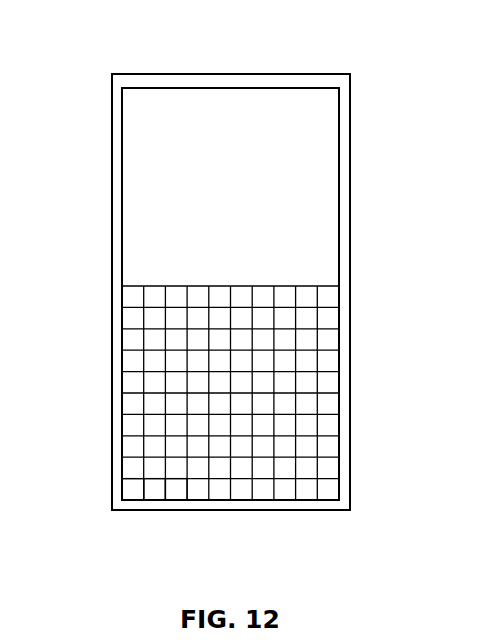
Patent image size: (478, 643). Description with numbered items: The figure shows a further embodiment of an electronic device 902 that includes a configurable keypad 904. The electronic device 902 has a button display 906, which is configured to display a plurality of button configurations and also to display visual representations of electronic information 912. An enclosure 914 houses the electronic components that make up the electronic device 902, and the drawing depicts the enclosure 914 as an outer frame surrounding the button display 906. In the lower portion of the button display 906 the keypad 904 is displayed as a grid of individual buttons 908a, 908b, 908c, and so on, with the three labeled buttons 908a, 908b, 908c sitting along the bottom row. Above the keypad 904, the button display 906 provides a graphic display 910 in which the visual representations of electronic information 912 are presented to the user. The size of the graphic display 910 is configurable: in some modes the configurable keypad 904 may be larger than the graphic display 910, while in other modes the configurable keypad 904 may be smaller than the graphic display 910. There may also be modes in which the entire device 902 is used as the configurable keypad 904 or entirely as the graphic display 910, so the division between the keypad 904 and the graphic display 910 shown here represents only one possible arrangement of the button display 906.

The electronic device 902 is at (108, 60).
The configurable keypad 904 is at (122, 386).
The button display 906 is at (364, 90).
The individual button 908a is at (129, 493).
The individual button 908b is at (155, 493).
The individual button 908c is at (182, 493).
The graphic display 910 is at (99, 90).
The visual representations of electronic information 912 is at (323, 94).
The enclosure 914 is at (243, 73).